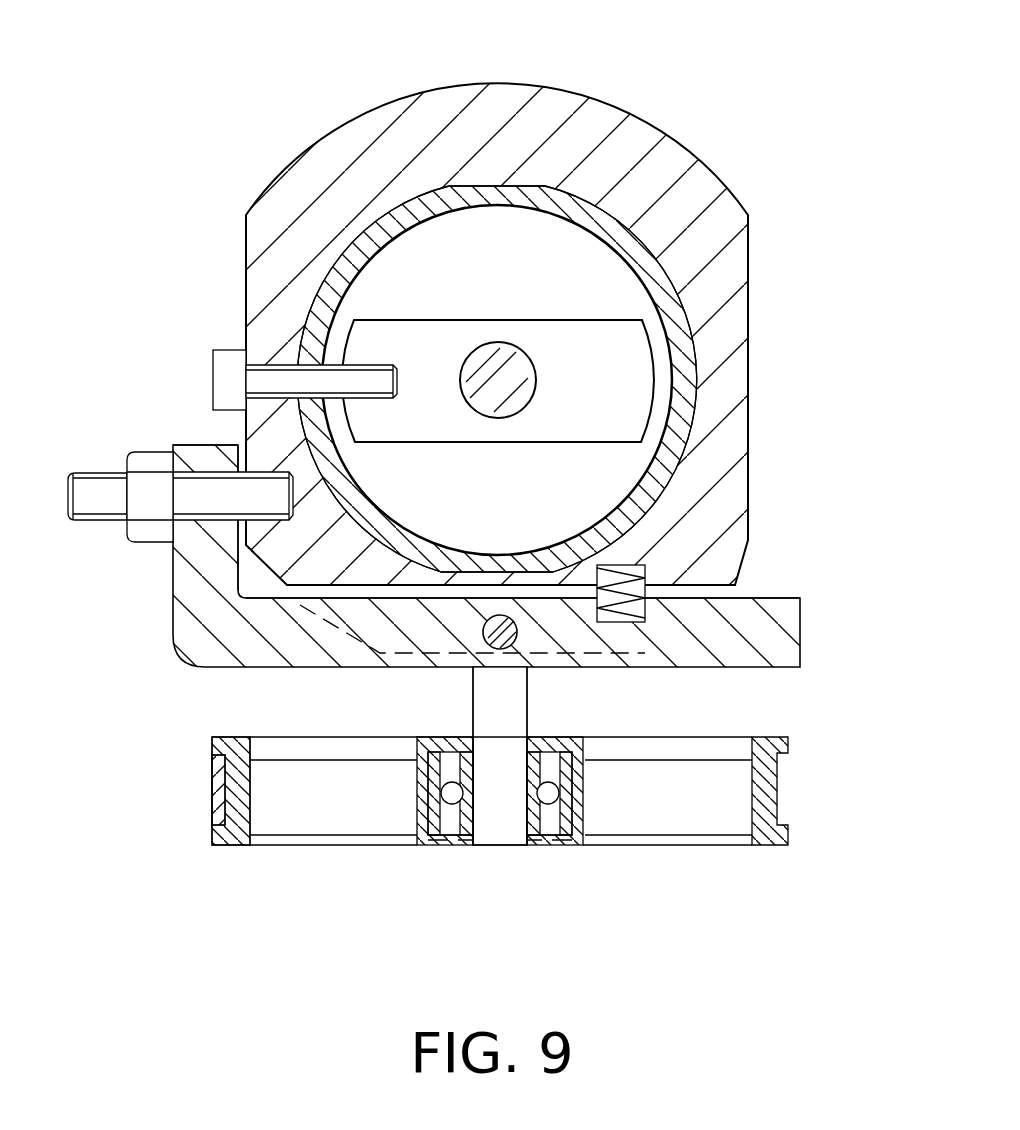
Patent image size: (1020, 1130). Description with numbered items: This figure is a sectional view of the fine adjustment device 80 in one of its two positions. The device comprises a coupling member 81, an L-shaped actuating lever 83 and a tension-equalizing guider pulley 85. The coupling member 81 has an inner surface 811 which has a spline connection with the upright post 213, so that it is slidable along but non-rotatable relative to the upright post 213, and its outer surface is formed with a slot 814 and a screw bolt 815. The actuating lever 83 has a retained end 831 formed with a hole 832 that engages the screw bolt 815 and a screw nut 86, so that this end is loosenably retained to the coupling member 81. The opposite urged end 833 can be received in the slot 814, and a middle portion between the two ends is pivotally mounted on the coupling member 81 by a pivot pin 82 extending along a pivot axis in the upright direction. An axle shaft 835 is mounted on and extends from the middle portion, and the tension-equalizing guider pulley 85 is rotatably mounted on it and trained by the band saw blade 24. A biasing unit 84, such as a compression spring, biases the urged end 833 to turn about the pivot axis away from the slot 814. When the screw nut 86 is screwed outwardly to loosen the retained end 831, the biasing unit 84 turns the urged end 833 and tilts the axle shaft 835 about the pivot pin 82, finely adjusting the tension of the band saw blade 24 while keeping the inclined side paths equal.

The upright post 213 is at (635, 255).
The fine adjustment device 80 is at (752, 308).
The coupling member 81 is at (740, 408).
The inner surface 811 is at (700, 393).
The slot 814 is at (693, 597).
The screw bolt 815 is at (95, 482).
The screw nut 86 is at (155, 462).
The hole 832 is at (216, 518).
The retained end 831 is at (178, 597).
The L-shaped actuating lever 83 is at (777, 667).
The biasing unit 84 is at (693, 640).
The urged end 833 is at (723, 657).
The pivot pin 82 is at (518, 632).
The axle shaft 835 is at (473, 702).
The band saw blade 24 is at (213, 783).
The tension-equalizing guider pulley 85 is at (238, 838).